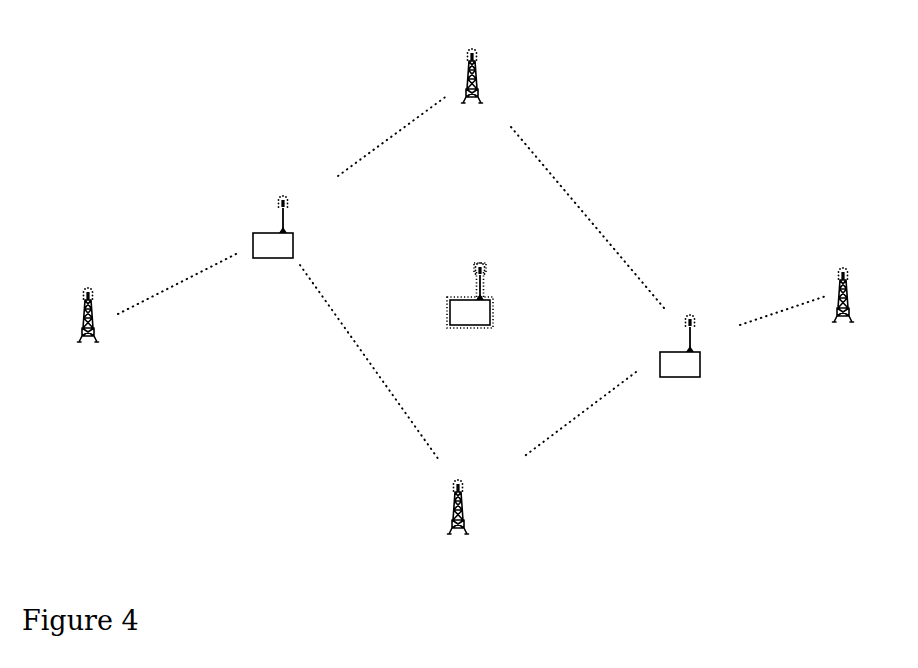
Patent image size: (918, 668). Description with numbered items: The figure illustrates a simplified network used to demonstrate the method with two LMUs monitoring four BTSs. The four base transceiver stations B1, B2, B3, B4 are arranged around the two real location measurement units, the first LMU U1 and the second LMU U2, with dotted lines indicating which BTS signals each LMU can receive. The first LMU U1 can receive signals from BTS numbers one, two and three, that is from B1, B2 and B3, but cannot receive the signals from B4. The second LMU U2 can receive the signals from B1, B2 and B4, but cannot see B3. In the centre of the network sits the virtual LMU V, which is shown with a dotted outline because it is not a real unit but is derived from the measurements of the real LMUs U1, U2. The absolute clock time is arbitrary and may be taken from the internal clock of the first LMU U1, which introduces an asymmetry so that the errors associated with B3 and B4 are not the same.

The base transceiver station B1 is at (494, 56).
The base transceiver station B2 is at (482, 483).
The base transceiver station B3 is at (104, 296).
The base transceiver station B4 is at (859, 275).
The first LMU U1 is at (291, 203).
The second LMU U2 is at (699, 324).
The virtual LMU V is at (484, 270).